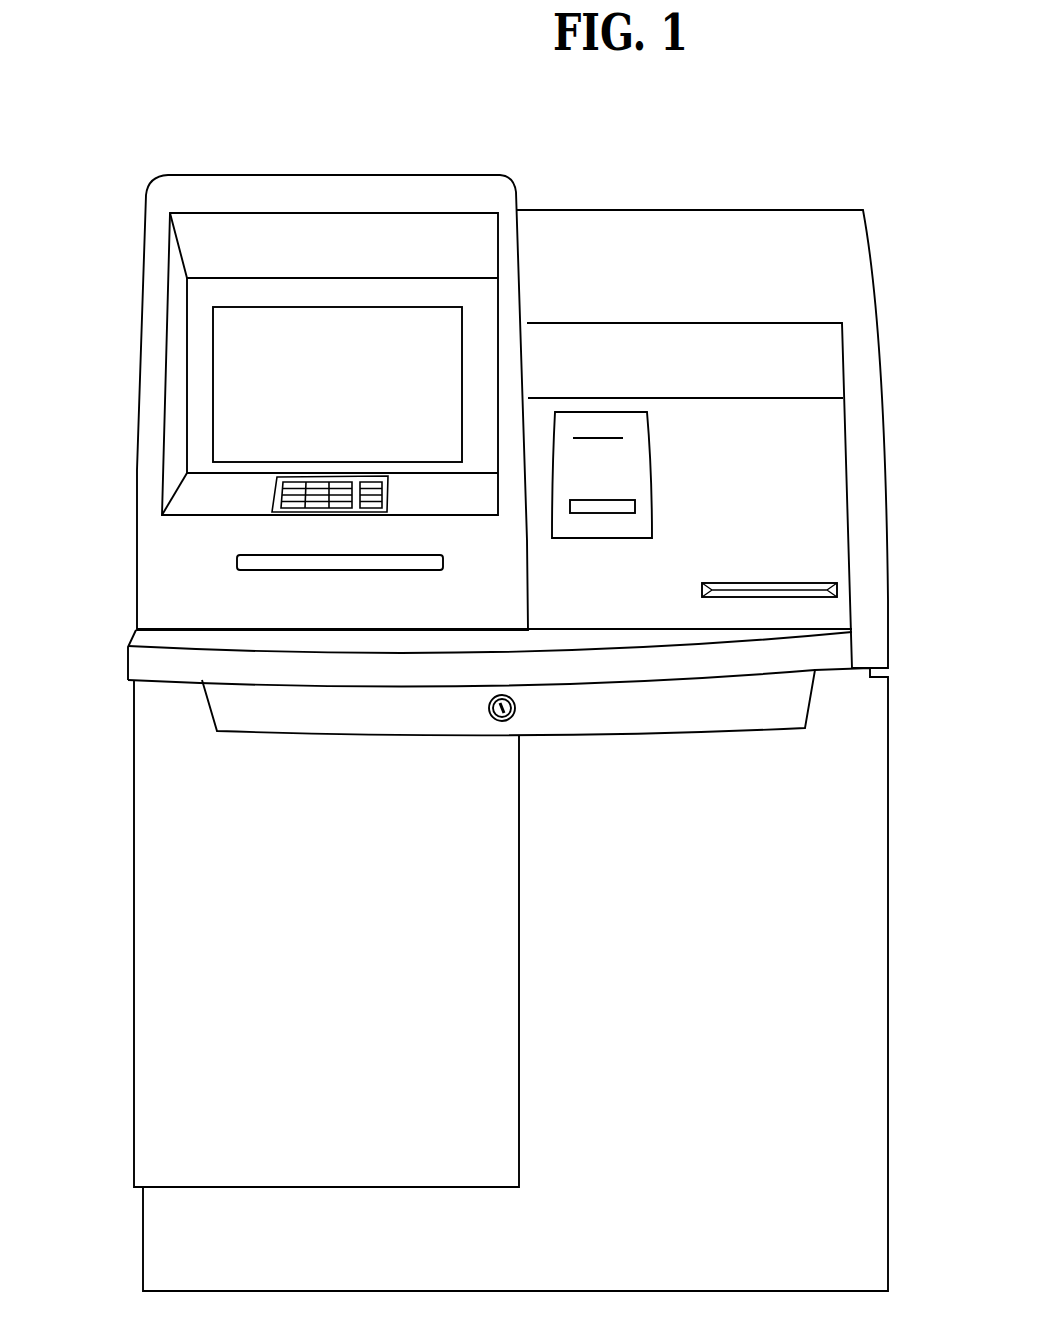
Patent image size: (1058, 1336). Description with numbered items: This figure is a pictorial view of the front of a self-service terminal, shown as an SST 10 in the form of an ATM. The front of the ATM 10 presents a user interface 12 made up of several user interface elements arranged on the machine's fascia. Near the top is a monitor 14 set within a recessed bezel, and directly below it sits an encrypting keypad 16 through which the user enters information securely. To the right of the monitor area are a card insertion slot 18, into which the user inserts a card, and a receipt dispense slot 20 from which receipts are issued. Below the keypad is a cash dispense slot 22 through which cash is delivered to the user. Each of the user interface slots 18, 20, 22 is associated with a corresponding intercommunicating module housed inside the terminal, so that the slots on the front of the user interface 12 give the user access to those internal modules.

The SST 10 is at (888, 973).
The user interface 12 is at (113, 871).
The monitor 14 is at (235, 378).
The encrypting keypad 16 is at (317, 486).
The card insertion slot 18 is at (600, 513).
The receipt dispense slot 20 is at (767, 582).
The cash dispense slot 22 is at (323, 571).